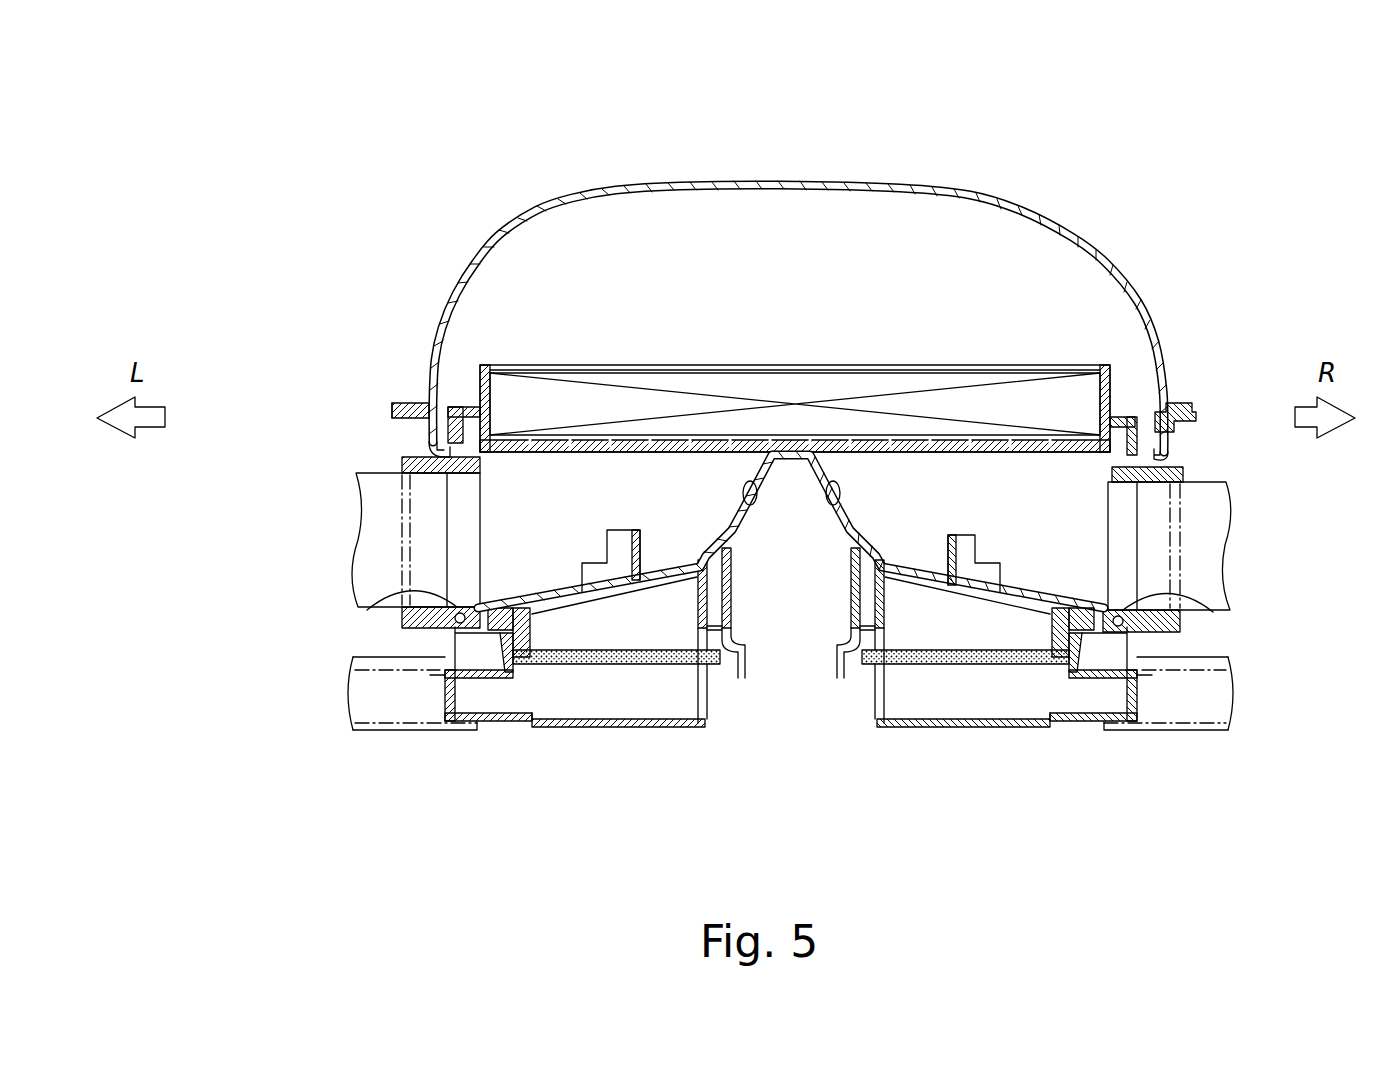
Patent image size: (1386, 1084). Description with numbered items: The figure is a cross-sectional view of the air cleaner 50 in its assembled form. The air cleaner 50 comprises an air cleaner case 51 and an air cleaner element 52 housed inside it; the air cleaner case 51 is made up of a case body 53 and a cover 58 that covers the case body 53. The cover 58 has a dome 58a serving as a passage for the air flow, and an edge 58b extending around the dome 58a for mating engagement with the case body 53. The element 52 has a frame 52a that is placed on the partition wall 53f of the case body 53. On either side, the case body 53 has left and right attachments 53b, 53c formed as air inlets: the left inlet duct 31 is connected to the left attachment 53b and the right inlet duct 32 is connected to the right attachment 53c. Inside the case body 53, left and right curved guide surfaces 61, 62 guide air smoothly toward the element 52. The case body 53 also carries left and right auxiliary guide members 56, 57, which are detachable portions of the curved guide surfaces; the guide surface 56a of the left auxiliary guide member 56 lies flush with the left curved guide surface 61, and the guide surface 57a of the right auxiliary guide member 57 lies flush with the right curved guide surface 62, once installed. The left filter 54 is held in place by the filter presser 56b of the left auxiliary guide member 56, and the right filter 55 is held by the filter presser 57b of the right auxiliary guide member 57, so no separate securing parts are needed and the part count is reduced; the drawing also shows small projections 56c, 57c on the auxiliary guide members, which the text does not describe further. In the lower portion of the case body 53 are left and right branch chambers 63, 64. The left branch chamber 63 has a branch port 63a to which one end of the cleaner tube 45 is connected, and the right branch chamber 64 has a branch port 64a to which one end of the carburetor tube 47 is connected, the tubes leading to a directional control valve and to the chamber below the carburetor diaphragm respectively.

The air cleaner 50 is at (371, 152).
The air cleaner case 51 is at (278, 270).
The air cleaner element 52 is at (863, 357).
The frame 52a is at (1130, 420).
The case body 53 is at (412, 448).
The left attachment 53b is at (370, 610).
The right attachment 53c is at (1213, 612).
The partition wall 53f is at (455, 420).
The cover 58 is at (420, 334).
The dome 58a is at (810, 198).
The edge 58b is at (1184, 402).
The left inlet duct 31 is at (348, 572).
The right inlet duct 32 is at (1240, 563).
The cleaner tube 45 is at (387, 735).
The carburetor tube 47 is at (1196, 735).
The left filter 54 is at (616, 618).
The right filter 55 is at (965, 630).
The left auxiliary guide member 56 is at (634, 612).
The guide surface 56a is at (665, 562).
The filter presser 56b is at (746, 672).
The left housing projection 56c is at (600, 572).
The right auxiliary guide member 57 is at (931, 612).
The guide surface 57a is at (905, 570).
The filter presser 57b is at (841, 672).
The right housing projection 57c is at (968, 558).
The left curved guide surface 61 is at (748, 515).
The right curved guide surface 62 is at (834, 515).
The left branch chamber 63 is at (570, 632).
The branch port 63a is at (500, 727).
The right branch chamber 64 is at (1002, 636).
The branch port 64a is at (1078, 727).